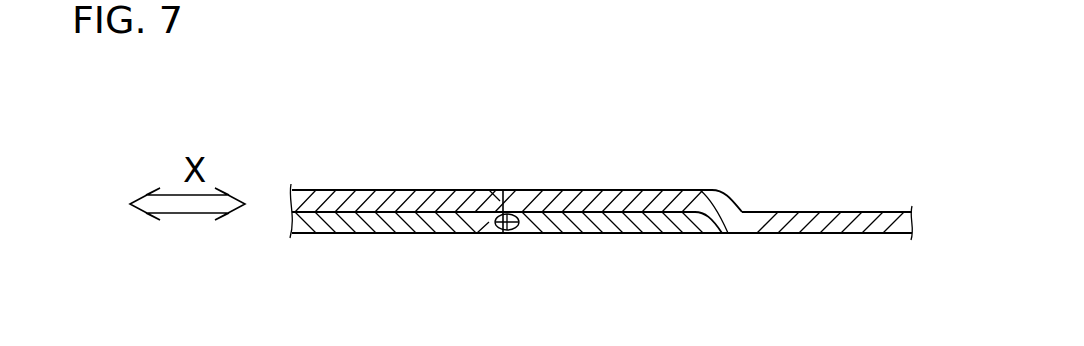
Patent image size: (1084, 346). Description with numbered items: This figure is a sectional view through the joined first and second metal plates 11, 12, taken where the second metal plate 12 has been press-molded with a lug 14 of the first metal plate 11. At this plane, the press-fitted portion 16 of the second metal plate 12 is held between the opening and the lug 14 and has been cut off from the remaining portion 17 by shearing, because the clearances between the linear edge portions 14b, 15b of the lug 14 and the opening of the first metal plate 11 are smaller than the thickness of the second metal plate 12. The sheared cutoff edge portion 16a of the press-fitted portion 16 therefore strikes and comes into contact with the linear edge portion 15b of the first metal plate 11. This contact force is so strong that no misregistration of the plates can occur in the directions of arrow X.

The first metal plate 11 is at (819, 212).
The second metal plate 12 is at (397, 190).
The lug 14 is at (643, 196).
The linear edge portion 14b is at (489, 190).
The linear edge portion 15b is at (522, 234).
The press-fitted portion 16 is at (634, 234).
The cutoff edge portion 16a is at (477, 233).
The remaining portion 17 is at (310, 188).